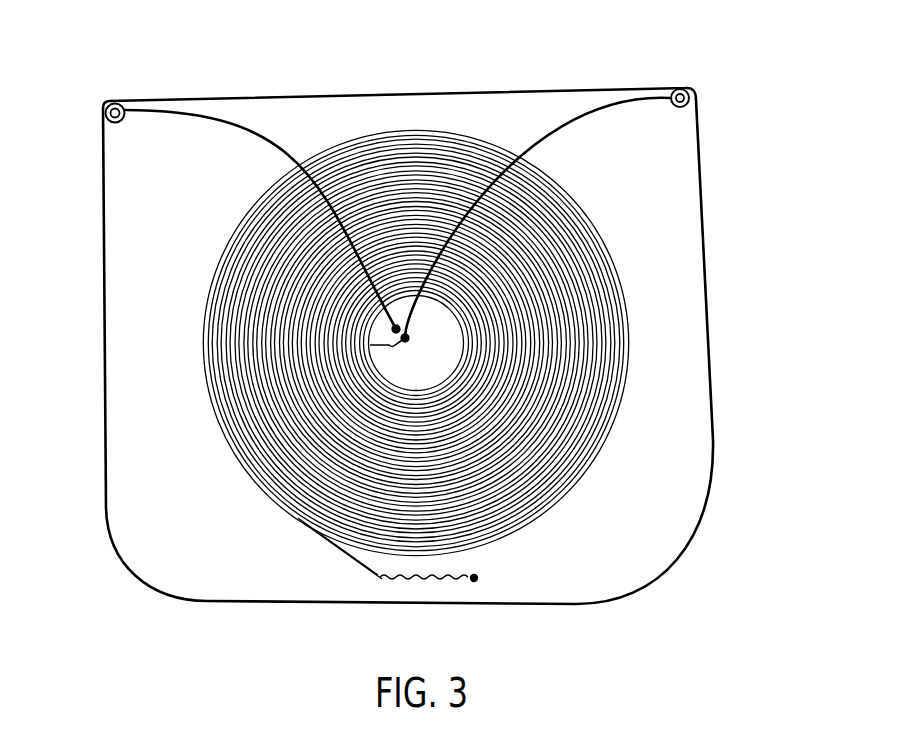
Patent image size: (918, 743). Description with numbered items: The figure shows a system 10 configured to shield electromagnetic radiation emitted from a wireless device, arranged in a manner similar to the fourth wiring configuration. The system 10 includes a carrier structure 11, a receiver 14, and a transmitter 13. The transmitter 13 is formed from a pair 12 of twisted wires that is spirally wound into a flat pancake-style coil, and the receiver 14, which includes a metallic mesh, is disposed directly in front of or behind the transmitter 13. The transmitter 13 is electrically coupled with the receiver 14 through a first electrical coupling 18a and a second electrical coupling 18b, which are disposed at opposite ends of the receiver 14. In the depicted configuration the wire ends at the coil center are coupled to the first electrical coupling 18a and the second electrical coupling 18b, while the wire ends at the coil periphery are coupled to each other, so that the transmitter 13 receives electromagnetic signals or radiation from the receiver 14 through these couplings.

The system 10 is at (730, 107).
The carrier structure 11 is at (676, 177).
The pair of twisted wires 12 is at (627, 310).
The transmitter 13 is at (597, 222).
The receiver 14 is at (707, 234).
The first electrical coupling 18a is at (108, 101).
The second electrical coupling 18b is at (689, 89).